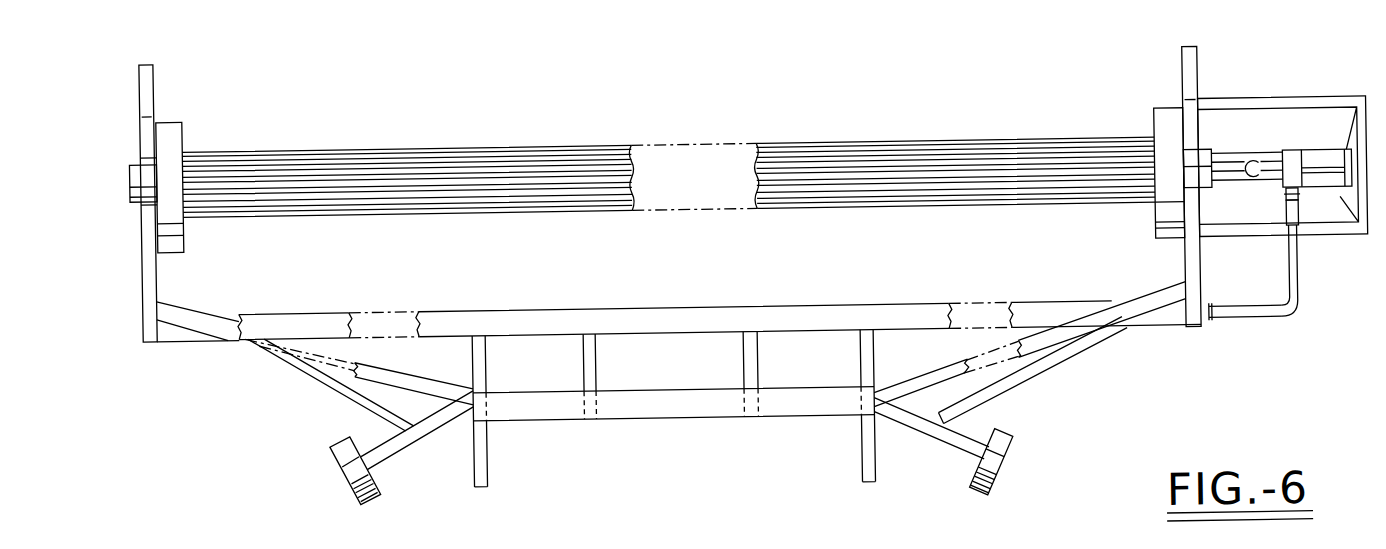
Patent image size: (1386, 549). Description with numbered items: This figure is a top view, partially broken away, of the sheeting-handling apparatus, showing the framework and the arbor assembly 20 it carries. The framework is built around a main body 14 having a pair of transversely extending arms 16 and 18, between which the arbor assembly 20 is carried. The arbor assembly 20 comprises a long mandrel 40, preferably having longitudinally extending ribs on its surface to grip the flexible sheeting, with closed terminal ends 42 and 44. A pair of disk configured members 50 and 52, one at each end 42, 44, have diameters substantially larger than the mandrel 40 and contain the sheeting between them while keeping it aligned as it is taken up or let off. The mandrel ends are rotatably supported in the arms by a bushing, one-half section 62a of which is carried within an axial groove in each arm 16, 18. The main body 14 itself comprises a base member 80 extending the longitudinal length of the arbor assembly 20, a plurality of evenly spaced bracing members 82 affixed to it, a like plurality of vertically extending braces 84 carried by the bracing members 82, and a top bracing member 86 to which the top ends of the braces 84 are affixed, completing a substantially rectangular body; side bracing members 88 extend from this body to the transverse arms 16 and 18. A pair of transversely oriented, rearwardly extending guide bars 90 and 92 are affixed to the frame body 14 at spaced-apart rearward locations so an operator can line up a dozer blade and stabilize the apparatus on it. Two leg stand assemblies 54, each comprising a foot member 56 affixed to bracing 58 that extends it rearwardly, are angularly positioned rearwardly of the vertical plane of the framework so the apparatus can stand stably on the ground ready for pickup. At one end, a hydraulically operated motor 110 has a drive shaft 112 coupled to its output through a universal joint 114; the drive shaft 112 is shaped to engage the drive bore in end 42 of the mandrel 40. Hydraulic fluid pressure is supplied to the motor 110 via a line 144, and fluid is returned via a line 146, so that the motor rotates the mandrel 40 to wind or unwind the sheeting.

The main body 14 is at (689, 430).
The transversely extending arm 16 is at (1184, 83).
The transversely extending arm 18 is at (140, 93).
The arbor assembly 20 is at (487, 144).
The mandrel 40 is at (879, 150).
The terminal end 42 is at (1200, 167).
The terminal end 44 is at (130, 182).
The disk configured member 50 is at (1155, 136).
The disk configured member 52 is at (172, 125).
The leg stand assembly 54 is at (336, 480).
The foot member 56 is at (352, 503).
The bracing 58 is at (330, 386).
The one-half section of bushing 62a is at (145, 207).
The base member 80 is at (679, 316).
The bracing member 82 is at (484, 377).
The vertically extending brace 84 is at (590, 426).
The top bracing member 86 is at (682, 427).
The side bracing member 88 is at (210, 337).
The guide bar 90 is at (866, 494).
The guide bar 92 is at (478, 493).
The hydraulically operated motor 110 is at (1316, 220).
The drive shaft 112 is at (1222, 180).
The universal joint 114 is at (1265, 176).
The line 144 is at (1268, 323).
The line 146 is at (1252, 335).